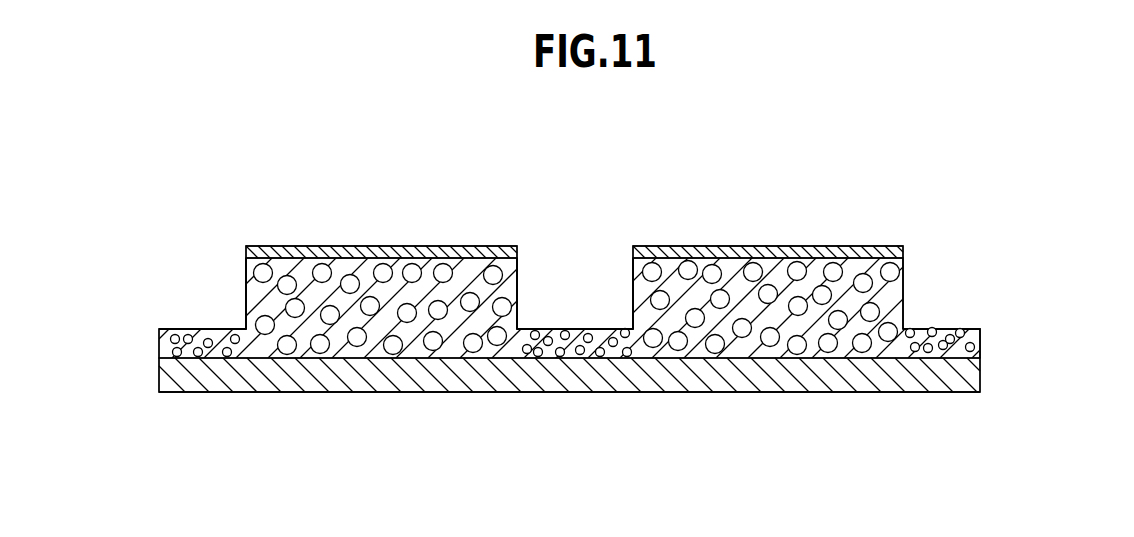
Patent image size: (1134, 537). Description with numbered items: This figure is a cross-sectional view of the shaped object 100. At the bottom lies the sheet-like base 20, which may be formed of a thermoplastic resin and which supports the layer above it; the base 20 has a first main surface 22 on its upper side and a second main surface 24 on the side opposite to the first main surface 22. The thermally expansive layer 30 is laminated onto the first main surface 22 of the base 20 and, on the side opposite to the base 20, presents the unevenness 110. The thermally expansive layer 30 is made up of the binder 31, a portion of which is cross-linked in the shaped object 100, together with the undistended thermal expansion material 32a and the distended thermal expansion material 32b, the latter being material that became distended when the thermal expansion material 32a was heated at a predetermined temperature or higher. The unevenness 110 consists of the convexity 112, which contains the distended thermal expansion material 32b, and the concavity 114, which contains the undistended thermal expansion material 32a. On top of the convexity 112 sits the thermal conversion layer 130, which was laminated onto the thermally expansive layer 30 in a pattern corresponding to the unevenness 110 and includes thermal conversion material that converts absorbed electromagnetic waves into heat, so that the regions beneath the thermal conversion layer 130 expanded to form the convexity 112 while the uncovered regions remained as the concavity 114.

The shaped object 100 is at (872, 176).
The unevenness 110 is at (158, 198).
The convexity 112 is at (246, 272).
The concavity 114 is at (183, 329).
The thermal conversion layer 130 is at (437, 246).
The base 20 is at (982, 377).
The first main surface 22 is at (953, 329).
The second main surface 24 is at (962, 393).
The thermally expansive layer 30 is at (812, 469).
The binder 31 is at (748, 352).
The thermal expansion material 32a is at (622, 357).
The distended thermal expansion material 32b is at (688, 355).